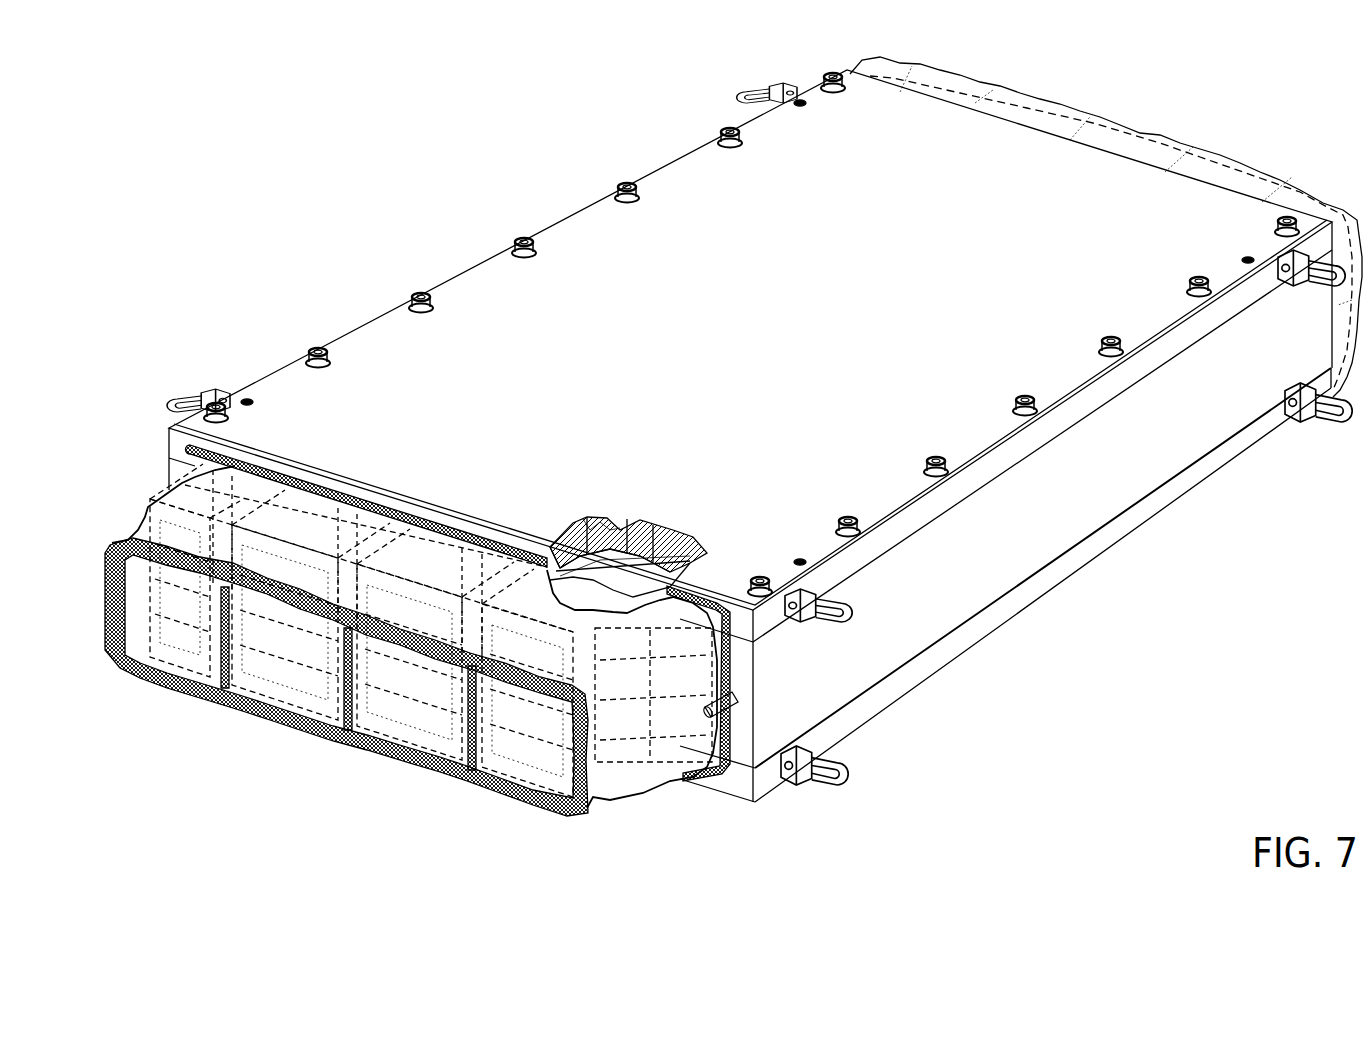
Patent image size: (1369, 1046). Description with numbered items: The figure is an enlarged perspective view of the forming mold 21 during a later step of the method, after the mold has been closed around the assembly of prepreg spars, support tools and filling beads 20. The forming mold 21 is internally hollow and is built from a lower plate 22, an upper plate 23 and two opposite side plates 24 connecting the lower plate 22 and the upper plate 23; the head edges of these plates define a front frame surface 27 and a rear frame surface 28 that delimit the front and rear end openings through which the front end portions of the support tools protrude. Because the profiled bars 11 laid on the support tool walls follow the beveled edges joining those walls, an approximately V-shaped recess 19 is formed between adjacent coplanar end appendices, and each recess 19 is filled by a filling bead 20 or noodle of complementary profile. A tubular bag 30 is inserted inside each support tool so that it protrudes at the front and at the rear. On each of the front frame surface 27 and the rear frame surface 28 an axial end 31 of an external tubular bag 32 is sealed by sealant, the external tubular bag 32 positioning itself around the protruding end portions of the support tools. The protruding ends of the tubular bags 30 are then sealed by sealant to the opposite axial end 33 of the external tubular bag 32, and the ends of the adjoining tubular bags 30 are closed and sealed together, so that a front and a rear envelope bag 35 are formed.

The profiled bars 11 is at (593, 562).
The recess 19 is at (572, 580).
The filling beads 20 is at (613, 567).
The forming mold 21 is at (522, 213).
The lower plate 22 is at (992, 627).
The upper plate 23 is at (682, 207).
The side plates 24 is at (1114, 488).
The front frame surface 27 is at (744, 653).
The rear frame surface 28 is at (936, 95).
The tubular bag 30 is at (177, 633).
The axial end 31 is at (340, 495).
The external tubular bag 32 is at (1047, 127).
The axial end 33 is at (290, 707).
The envelope bag 35 is at (591, 817).